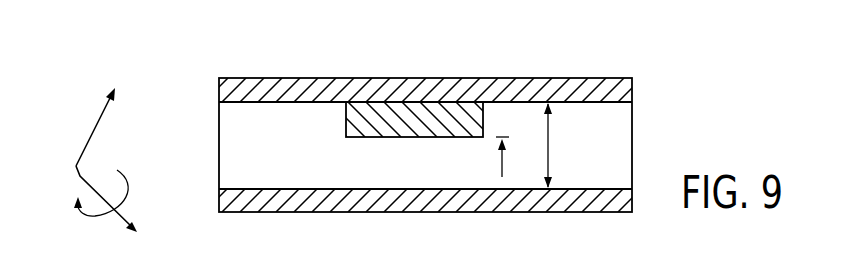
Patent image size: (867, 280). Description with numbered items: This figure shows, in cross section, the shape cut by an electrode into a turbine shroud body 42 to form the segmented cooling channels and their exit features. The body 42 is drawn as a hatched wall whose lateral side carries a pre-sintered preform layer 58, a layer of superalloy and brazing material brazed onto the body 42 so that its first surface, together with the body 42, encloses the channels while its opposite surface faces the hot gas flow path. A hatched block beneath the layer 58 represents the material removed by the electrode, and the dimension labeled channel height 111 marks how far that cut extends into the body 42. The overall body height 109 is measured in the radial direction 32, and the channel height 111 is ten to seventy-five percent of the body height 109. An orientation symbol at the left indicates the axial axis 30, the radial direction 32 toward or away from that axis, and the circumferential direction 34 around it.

The axial axis 30 is at (82, 177).
The radial direction 32 is at (90, 130).
The circumferential direction 34 is at (117, 170).
The body 42 is at (219, 138).
The pre-sintered preform layer 58 is at (257, 90).
The body height 109 is at (550, 147).
The channel height 111 is at (502, 102).